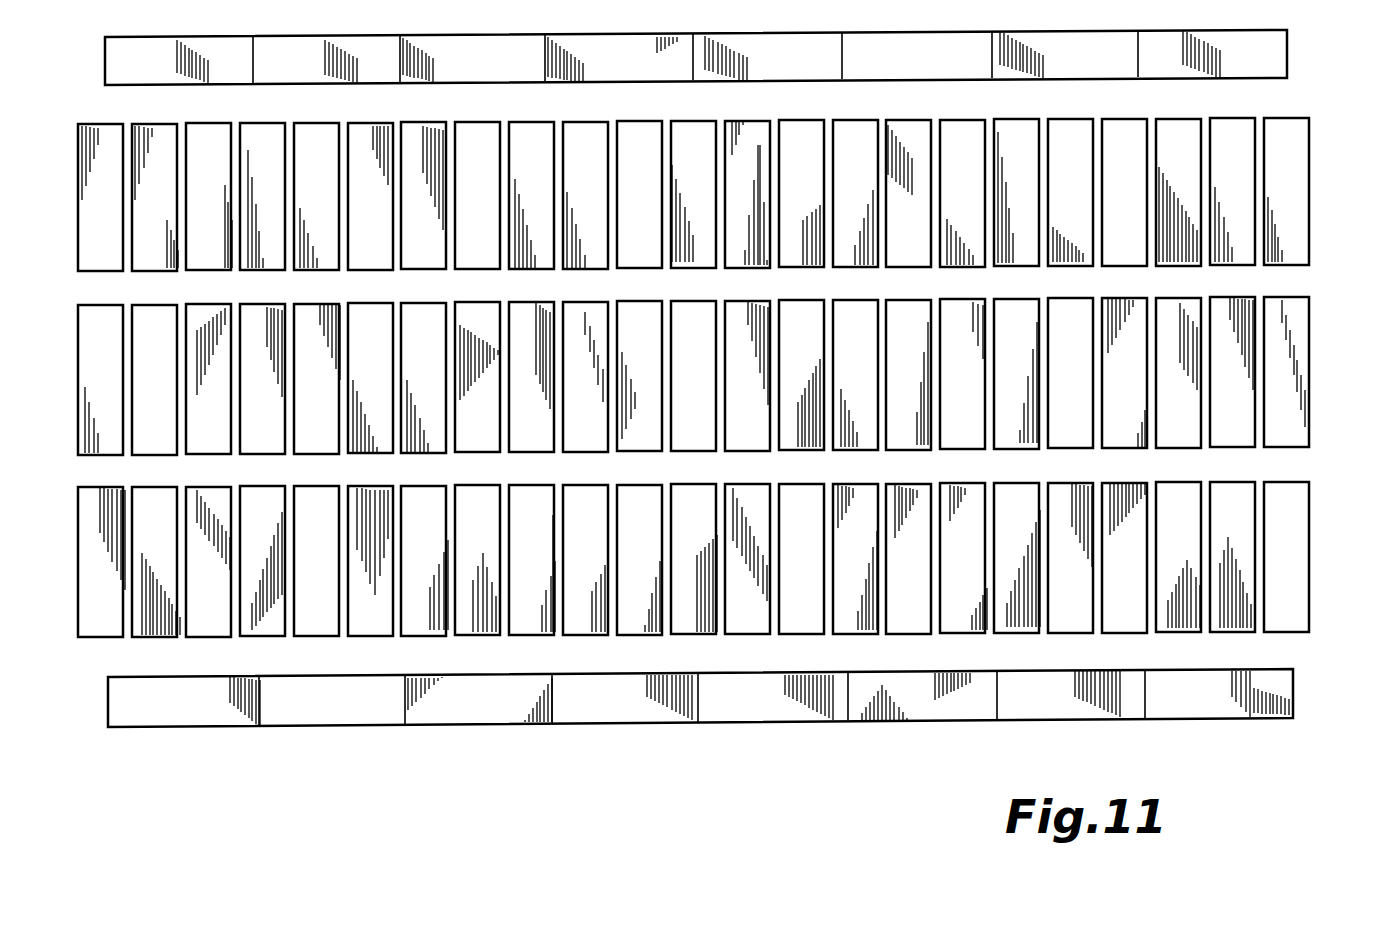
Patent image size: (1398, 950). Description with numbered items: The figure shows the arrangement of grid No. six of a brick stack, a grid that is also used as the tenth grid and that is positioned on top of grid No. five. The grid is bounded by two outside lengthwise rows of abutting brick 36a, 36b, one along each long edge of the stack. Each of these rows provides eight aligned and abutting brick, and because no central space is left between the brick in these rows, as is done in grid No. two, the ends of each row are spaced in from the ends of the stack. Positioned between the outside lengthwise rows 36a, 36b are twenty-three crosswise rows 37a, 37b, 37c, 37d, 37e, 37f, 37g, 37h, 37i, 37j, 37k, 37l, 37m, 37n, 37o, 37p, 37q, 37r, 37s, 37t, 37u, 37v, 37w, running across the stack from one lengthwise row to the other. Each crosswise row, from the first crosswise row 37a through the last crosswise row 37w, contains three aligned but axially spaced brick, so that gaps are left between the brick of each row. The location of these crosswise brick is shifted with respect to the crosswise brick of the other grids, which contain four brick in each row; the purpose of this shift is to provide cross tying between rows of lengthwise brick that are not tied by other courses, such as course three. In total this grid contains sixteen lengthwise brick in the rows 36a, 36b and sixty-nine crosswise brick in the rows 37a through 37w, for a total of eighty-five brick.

The outside lengthwise row of abutting brick 36a is at (1300, 46).
The outside lengthwise row of abutting brick 36b is at (1312, 693).
The crosswise row 37a is at (105, 637).
The crosswise row 37b is at (159, 637).
The crosswise row 37c is at (213, 637).
The crosswise row 37d is at (267, 636).
The crosswise row 37e is at (321, 636).
The crosswise row 37f is at (375, 636).
The crosswise row 37g is at (428, 636).
The crosswise row 37h is at (482, 635).
The crosswise row 37i is at (536, 635).
The crosswise row 37j is at (590, 635).
The crosswise row 37k is at (644, 635).
The crosswise row 37l is at (698, 634).
The crosswise row 37m is at (752, 634).
The crosswise row 37n is at (806, 634).
The crosswise row 37o is at (860, 634).
The crosswise row 37p is at (913, 634).
The crosswise row 37q is at (967, 633).
The crosswise row 37r is at (1021, 633).
The crosswise row 37s is at (1075, 633).
The crosswise row 37t is at (1129, 633).
The crosswise row 37u is at (1183, 632).
The crosswise row 37v is at (1237, 632).
The crosswise row 37w is at (1291, 632).